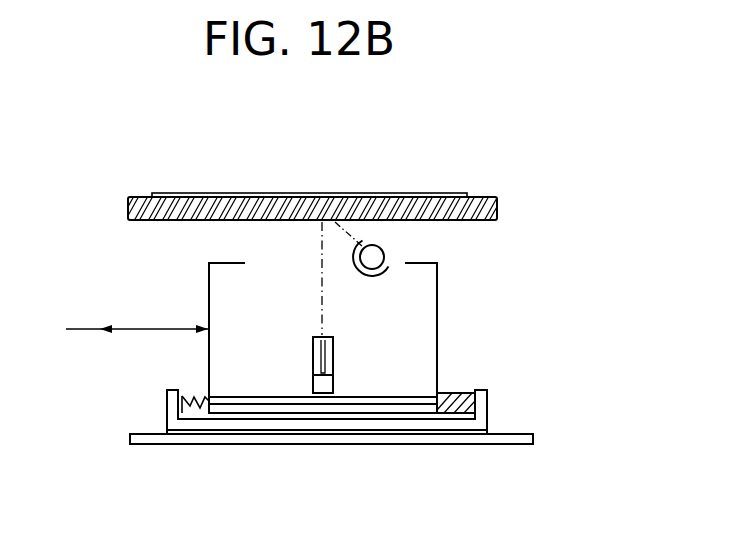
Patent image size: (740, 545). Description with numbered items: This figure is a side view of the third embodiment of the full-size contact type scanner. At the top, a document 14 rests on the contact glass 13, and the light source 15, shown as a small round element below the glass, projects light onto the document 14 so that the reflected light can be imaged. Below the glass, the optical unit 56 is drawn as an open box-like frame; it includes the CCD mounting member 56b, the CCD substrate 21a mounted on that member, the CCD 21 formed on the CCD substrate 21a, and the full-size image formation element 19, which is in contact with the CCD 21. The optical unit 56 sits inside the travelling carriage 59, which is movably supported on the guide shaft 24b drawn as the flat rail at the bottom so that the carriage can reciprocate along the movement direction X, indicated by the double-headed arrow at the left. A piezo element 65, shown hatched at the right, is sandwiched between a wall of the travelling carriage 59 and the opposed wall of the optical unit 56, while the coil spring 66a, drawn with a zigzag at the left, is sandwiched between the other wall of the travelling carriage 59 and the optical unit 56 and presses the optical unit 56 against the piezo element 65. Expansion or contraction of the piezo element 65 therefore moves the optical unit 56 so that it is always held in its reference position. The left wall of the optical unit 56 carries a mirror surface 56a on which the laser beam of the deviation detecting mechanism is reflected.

The contact glass 13 is at (187, 198).
The document 14 is at (311, 193).
The light source 15 is at (371, 252).
The optical unit 56 is at (485, 326).
The mirror surface 56a is at (208, 360).
The CCD mounting member 56b is at (438, 272).
The CCD substrate 21a is at (428, 393).
The piezo element 65 is at (457, 414).
The coil spring 66a is at (190, 406).
The travelling carriage 59 is at (382, 430).
The guide shaft 24b is at (533, 439).
The CCD 21 is at (325, 396).
The full-size image formation element 19 is at (313, 338).